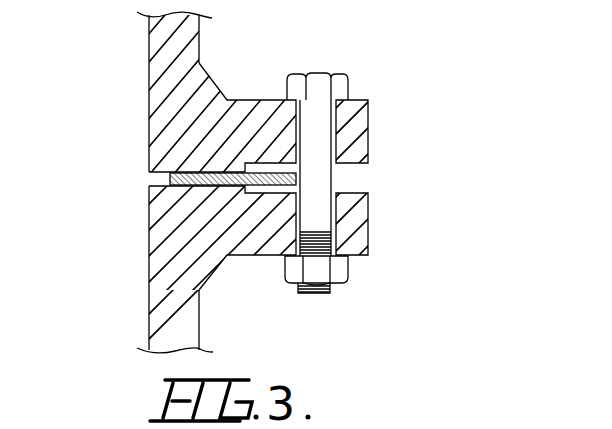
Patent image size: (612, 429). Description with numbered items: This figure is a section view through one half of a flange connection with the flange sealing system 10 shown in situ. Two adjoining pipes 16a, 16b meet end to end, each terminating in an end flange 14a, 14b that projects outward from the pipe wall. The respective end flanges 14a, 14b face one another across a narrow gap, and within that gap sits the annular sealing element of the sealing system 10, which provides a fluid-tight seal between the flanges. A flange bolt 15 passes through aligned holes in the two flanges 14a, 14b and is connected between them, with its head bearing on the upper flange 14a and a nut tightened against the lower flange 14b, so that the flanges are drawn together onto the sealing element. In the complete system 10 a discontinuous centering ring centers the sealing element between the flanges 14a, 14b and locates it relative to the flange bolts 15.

The flange sealing system 10 is at (141, 176).
The end flange 14a is at (255, 100).
The end flange 14b is at (256, 256).
The flange bolt 15 is at (318, 200).
The pipe 16a is at (148, 52).
The pipe 16b is at (148, 310).